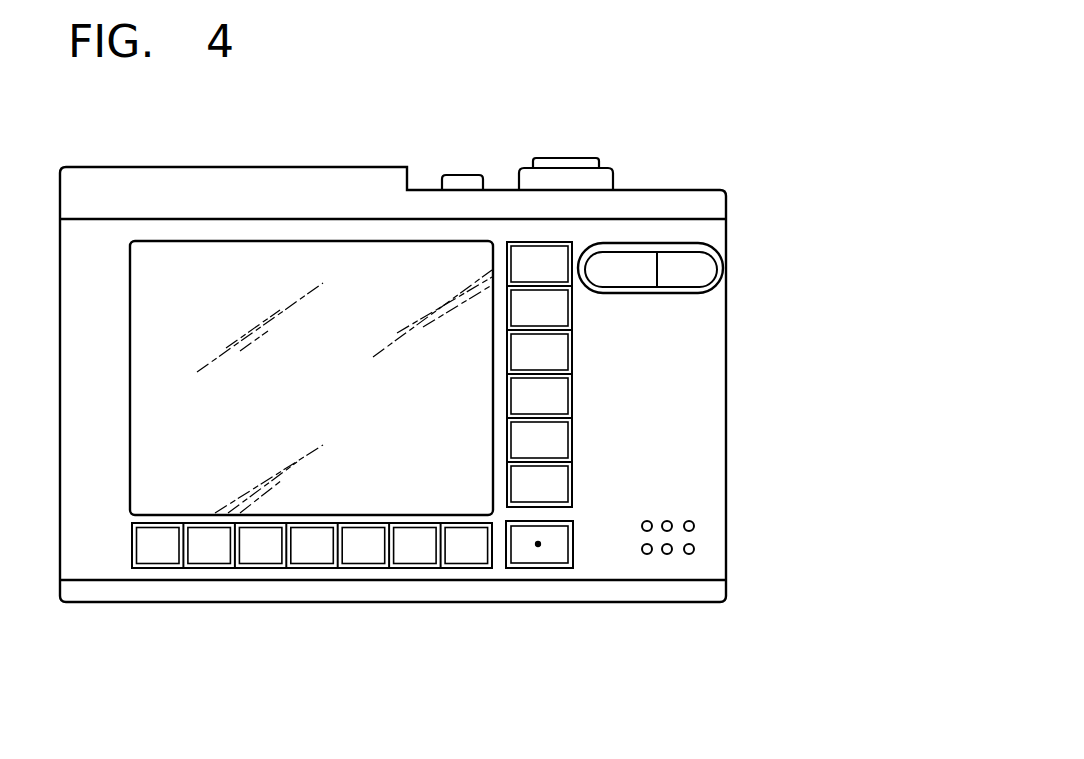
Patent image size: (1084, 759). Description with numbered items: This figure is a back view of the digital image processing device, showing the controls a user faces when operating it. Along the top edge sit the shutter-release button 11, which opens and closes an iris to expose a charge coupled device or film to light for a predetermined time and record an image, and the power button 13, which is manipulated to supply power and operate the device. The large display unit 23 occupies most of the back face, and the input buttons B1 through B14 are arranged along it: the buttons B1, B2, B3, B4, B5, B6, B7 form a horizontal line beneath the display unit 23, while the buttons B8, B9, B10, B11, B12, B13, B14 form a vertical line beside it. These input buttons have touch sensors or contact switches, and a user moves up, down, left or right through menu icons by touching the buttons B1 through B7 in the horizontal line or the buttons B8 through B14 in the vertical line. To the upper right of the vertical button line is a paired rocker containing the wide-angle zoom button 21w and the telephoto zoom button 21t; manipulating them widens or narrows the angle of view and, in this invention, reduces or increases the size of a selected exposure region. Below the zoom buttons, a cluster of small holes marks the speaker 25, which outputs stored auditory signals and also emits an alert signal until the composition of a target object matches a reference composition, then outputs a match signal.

The shutter-release button 11 is at (566, 163).
The power button 13 is at (462, 183).
The wide-angle zoom button 21w is at (623, 269).
The telephoto zoom button 21t is at (684, 269).
The display unit 23 is at (206, 258).
The speaker 25 is at (694, 526).
The input button B1 is at (158, 546).
The input button B2 is at (209, 546).
The input button B3 is at (260, 546).
The input button B4 is at (312, 546).
The input button B5 is at (363, 546).
The input button B6 is at (415, 546).
The input button B7 is at (466, 546).
The input button B8 is at (539, 264).
The input button B9 is at (539, 308).
The input button B10 is at (539, 352).
The input button B11 is at (539, 396).
The input button B12 is at (539, 440).
The input button B13 is at (539, 484).
The input button B14 is at (538, 571).